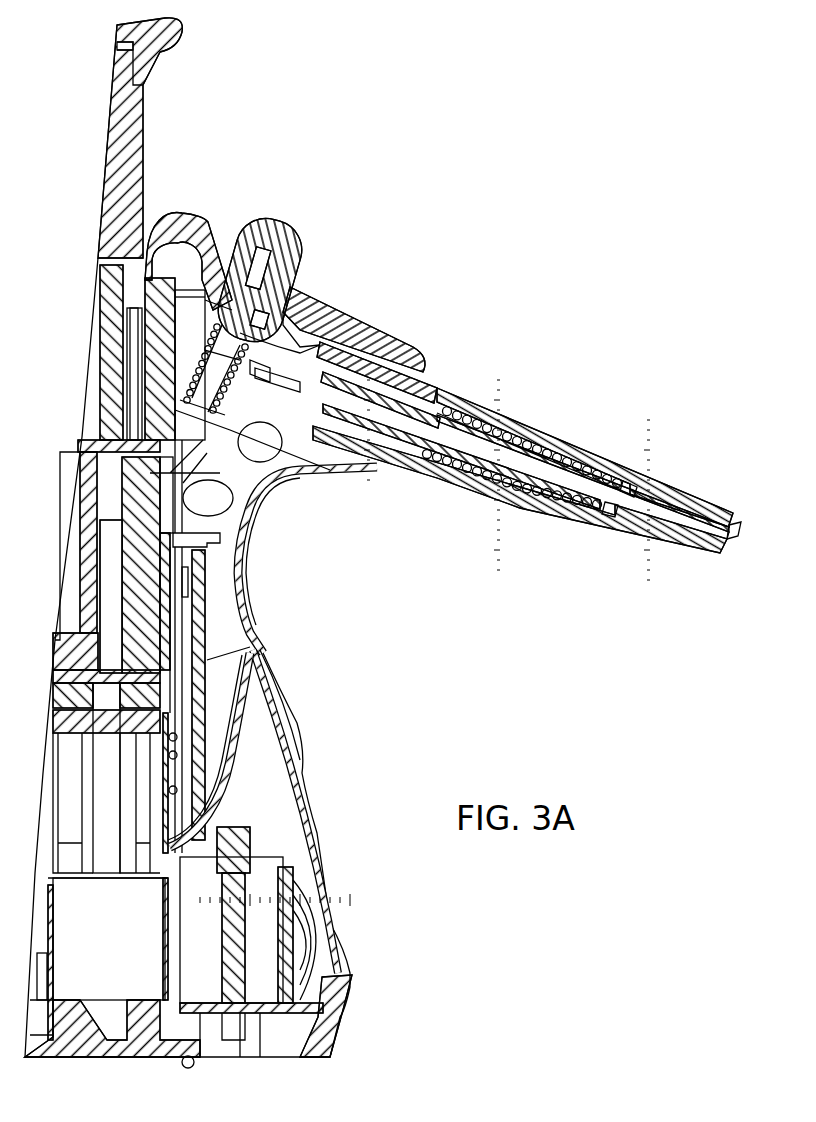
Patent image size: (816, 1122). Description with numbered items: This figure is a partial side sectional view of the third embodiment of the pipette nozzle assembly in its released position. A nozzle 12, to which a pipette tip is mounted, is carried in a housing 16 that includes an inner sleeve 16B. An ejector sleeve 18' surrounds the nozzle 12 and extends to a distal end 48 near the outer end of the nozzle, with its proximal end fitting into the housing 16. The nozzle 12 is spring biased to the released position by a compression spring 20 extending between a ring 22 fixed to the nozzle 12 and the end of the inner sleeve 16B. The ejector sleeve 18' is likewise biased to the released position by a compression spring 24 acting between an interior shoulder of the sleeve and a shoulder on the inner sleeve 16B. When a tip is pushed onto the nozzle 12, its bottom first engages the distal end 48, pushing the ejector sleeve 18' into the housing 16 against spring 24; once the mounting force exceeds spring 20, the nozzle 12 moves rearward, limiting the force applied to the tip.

The nozzle 12 is at (738, 515).
The housing 16 is at (418, 329).
The inner sleeve 16B is at (428, 393).
The ejector sleeve 18' is at (585, 457).
The compression spring 20 is at (587, 450).
The ring 22 is at (607, 520).
The compression spring 24 is at (493, 417).
The distal end of ejector sleeve 48 is at (718, 553).